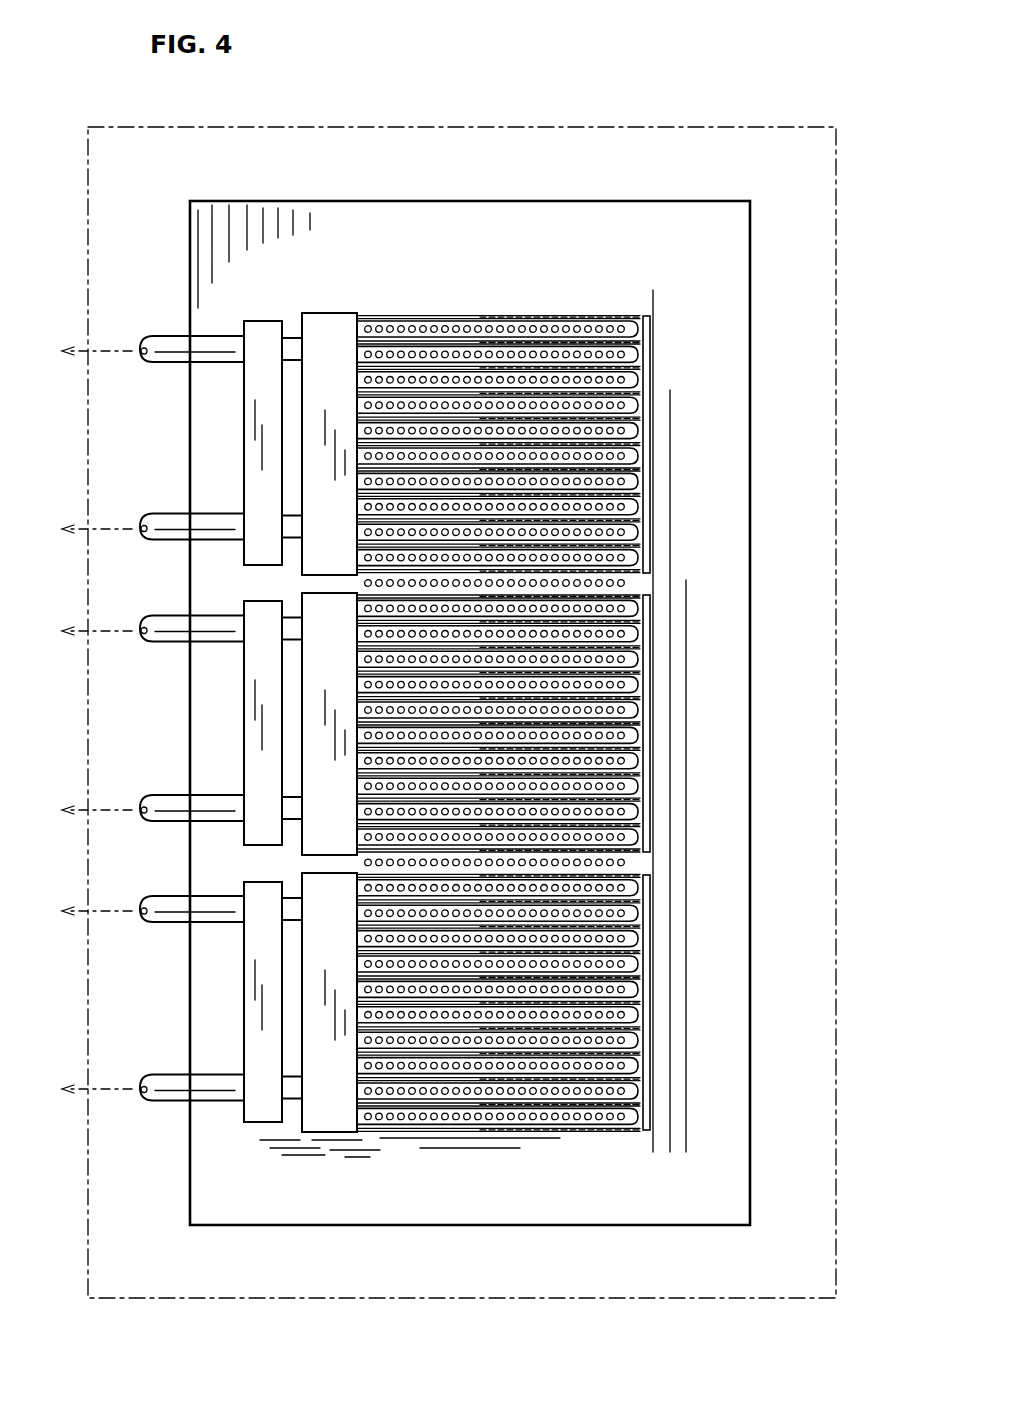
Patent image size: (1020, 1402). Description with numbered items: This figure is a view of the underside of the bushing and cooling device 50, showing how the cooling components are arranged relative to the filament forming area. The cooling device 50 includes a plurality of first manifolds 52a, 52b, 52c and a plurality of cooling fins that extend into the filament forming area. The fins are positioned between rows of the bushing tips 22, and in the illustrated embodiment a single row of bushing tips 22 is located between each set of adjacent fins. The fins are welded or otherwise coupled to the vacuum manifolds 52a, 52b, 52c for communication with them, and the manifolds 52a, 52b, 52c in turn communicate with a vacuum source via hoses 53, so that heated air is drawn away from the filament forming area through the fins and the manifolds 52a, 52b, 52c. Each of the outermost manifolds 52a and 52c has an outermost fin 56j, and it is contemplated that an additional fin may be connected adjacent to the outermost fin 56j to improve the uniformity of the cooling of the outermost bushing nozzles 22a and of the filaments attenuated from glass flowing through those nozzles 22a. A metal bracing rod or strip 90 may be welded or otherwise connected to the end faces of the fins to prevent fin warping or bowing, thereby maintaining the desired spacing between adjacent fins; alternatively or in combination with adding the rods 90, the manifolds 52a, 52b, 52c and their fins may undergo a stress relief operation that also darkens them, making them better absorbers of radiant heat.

The cooling device 50 is at (648, 282).
The bushing tips 22 is at (542, 354).
The outermost bushing nozzles 22a is at (423, 329).
The outermost fin 56j is at (570, 318).
The first manifold 52a is at (340, 1118).
The first manifold 52b is at (328, 663).
The first manifold 52c is at (328, 452).
The hoses 53 is at (165, 350).
The metal bracing rod or strip 90 is at (648, 520).